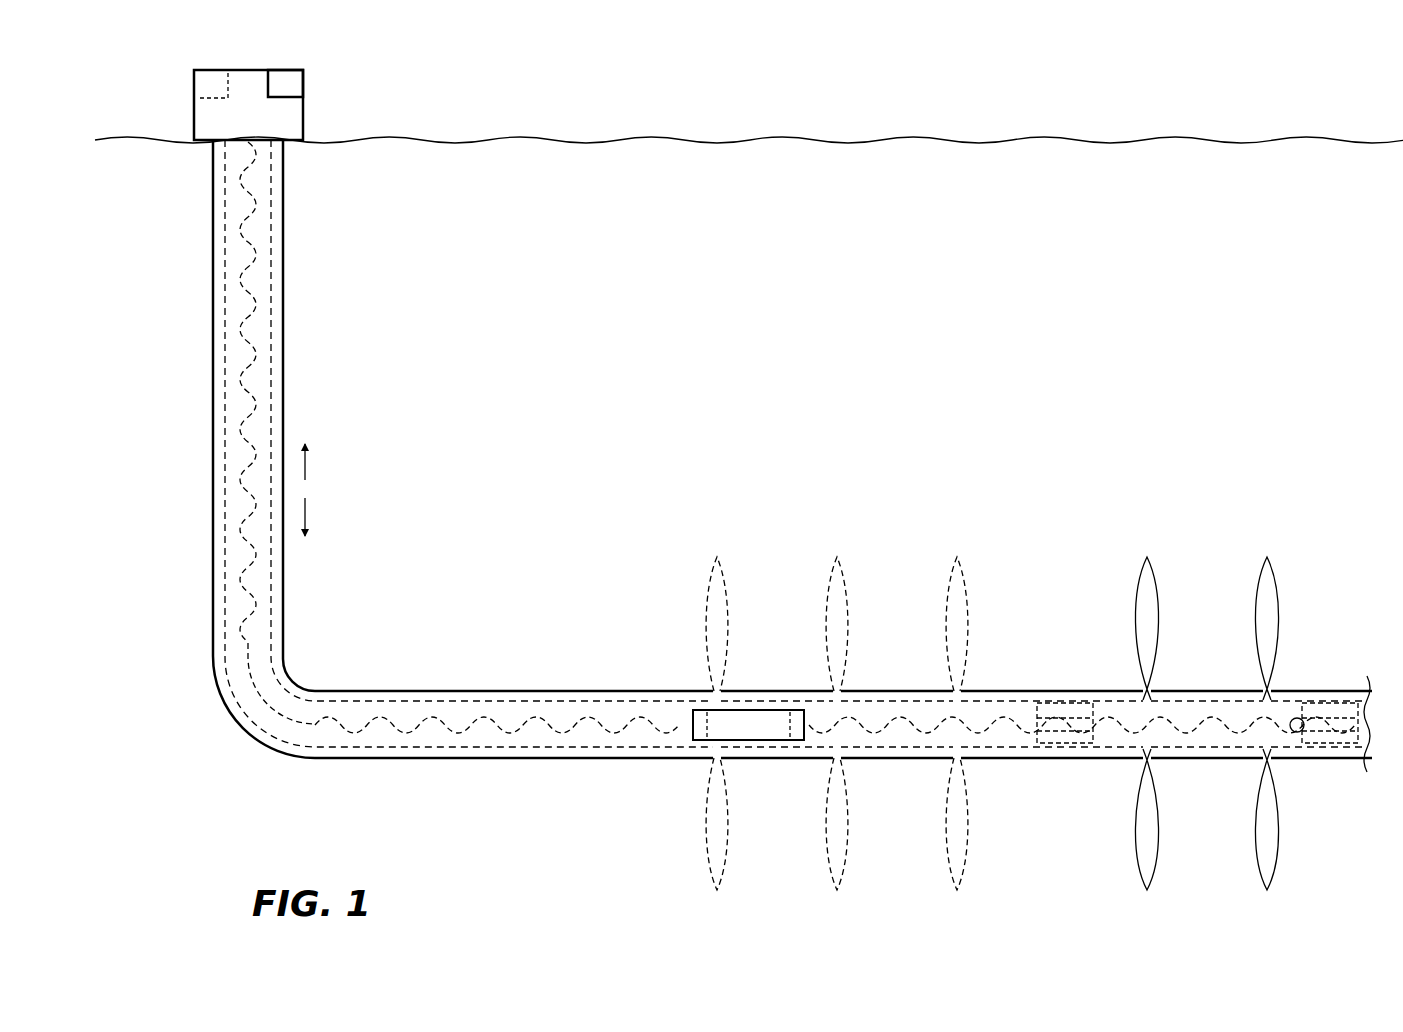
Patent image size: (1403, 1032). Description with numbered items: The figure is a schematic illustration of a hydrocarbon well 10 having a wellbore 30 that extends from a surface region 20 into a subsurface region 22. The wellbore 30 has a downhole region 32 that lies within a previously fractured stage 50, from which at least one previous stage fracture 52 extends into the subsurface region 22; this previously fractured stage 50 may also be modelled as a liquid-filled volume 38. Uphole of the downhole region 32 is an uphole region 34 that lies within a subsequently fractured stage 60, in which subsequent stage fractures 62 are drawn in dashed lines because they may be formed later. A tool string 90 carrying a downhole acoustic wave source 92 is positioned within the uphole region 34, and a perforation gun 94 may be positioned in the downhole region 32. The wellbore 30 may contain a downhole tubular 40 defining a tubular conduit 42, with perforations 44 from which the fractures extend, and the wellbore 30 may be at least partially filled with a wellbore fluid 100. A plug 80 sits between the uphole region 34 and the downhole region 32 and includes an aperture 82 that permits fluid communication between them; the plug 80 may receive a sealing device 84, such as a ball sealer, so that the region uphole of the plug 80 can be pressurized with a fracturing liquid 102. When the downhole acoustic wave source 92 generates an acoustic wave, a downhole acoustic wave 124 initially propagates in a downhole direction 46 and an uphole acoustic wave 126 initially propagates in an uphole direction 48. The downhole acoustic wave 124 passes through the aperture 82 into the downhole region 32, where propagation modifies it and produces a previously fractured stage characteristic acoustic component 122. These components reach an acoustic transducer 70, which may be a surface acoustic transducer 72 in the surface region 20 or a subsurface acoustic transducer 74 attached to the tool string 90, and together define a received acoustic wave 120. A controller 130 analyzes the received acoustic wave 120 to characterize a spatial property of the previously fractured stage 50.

The hydrocarbon well 10 is at (188, 78).
The surface region 20 is at (605, 87).
The subsurface region 22 is at (605, 295).
The wellbore 30 is at (214, 190).
The downhole region 32 is at (1208, 704).
The uphole region 34 is at (930, 700).
The liquid-filled volume 38 is at (1117, 707).
The downhole tubular 40 is at (226, 313).
The tubular conduit 42 is at (236, 357).
The perforations 44 is at (832, 690).
The downhole direction 46 is at (308, 508).
The uphole direction 48 is at (308, 464).
The previously fractured stage 50 is at (1104, 585).
The previous stage fracture 52 is at (1141, 576).
The subsequently fractured stage 60 is at (996, 591).
The subsequent stage fracture 62 is at (712, 577).
The acoustic transducer 70 is at (191, 82).
The surface acoustic transducer 72 is at (198, 98).
The subsurface acoustic transducer 74 is at (704, 722).
The plug 80 is at (1052, 760).
The aperture 82 is at (1085, 760).
The sealing device 84 is at (1298, 717).
The tool string 90 is at (485, 732).
The downhole acoustic wave source 92 is at (782, 709).
The perforation gun 94 is at (746, 720).
The wellbore fluid 100 is at (272, 653).
The fracturing liquid 102 is at (265, 630).
The received acoustic wave 120 is at (262, 210).
The previously fractured stage characteristic acoustic component 122 is at (270, 251).
The downhole acoustic wave 124 is at (272, 360).
The uphole acoustic wave 126 is at (260, 310).
The controller 130 is at (300, 83).